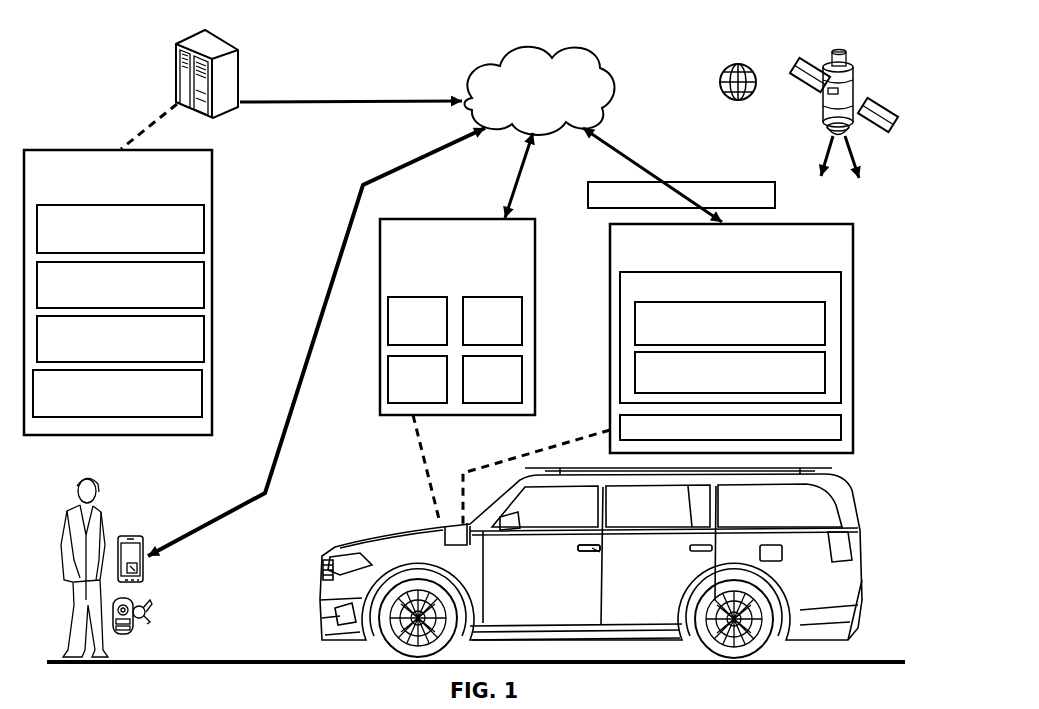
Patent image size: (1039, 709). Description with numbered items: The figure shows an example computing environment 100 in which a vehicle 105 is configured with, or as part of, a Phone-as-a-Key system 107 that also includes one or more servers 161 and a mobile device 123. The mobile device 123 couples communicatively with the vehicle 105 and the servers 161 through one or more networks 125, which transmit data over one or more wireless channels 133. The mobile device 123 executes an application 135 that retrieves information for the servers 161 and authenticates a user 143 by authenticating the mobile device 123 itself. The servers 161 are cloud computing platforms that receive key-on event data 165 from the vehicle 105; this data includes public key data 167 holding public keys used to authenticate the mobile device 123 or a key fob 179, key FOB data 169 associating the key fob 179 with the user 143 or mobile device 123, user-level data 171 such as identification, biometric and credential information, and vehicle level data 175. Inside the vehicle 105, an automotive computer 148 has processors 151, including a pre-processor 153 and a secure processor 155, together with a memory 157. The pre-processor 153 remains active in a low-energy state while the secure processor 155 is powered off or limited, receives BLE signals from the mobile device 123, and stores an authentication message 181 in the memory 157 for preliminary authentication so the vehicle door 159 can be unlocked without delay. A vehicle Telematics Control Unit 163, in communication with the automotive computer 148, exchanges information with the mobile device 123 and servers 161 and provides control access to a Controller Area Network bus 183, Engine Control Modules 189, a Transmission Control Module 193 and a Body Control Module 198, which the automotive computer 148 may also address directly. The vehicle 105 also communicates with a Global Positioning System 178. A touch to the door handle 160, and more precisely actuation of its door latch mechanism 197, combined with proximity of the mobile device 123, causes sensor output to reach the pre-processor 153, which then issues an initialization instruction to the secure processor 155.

The computing environment 100 is at (928, 82).
The vehicle 105 is at (850, 526).
The Phone-as-a-key (PaaK) system 107 is at (325, 518).
The mobile device 123 is at (140, 538).
The network(s) 125 is at (540, 91).
The wireless channel(s) 133 is at (279, 455).
The application 135 is at (142, 576).
The user 143 is at (98, 503).
The automotive computer 148 is at (658, 375).
The processor(s) 151 is at (730, 337).
The pre-processor 153 is at (730, 323).
The secure processor 155 is at (730, 372).
The memory 157 is at (730, 427).
The vehicle door 159 is at (507, 578).
The door handle 160 is at (592, 550).
The server(s) 161 is at (213, 118).
The vehicle Telematics Control Unit (TCU) 163 is at (457, 371).
The key-on event data 165 is at (118, 292).
The public key data 167 is at (120, 229).
The key FOB data 169 is at (120, 285).
The user-level data 171 is at (120, 339).
The vehicle level data 175 is at (117, 393).
The Global Positioning System (GPS) 178 is at (826, 110).
The key fob 179 is at (148, 616).
The authentication message 181 is at (681, 195).
The Controller Area Network (CAN) bus 183 is at (417, 321).
The Engine Control Module (ECM) 189 is at (492, 321).
The Transmission Control Module (TCM) 193 is at (417, 379).
The door latch mechanism 197 is at (590, 550).
The Body Control Module (BCM) 198 is at (492, 379).